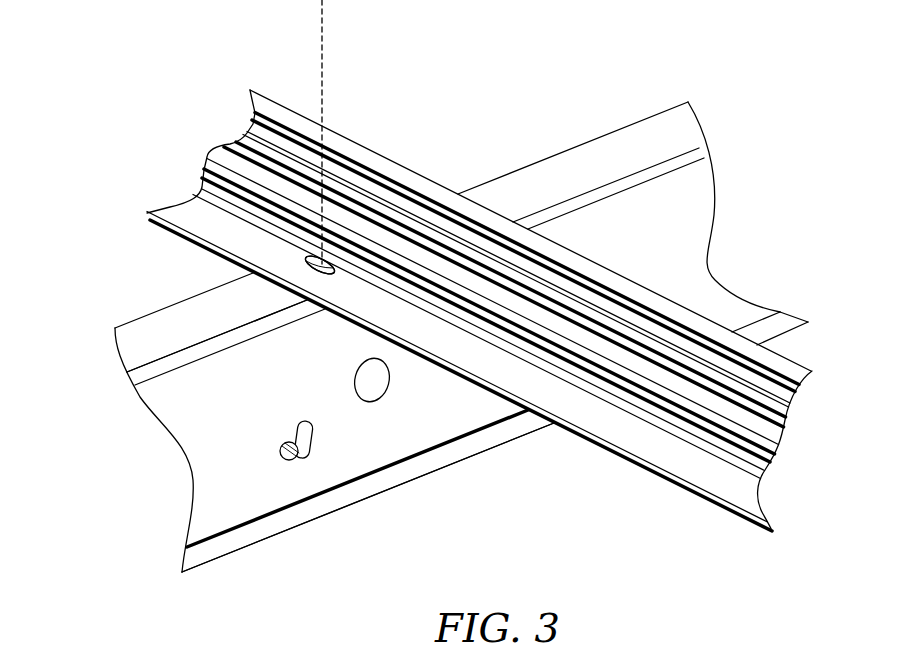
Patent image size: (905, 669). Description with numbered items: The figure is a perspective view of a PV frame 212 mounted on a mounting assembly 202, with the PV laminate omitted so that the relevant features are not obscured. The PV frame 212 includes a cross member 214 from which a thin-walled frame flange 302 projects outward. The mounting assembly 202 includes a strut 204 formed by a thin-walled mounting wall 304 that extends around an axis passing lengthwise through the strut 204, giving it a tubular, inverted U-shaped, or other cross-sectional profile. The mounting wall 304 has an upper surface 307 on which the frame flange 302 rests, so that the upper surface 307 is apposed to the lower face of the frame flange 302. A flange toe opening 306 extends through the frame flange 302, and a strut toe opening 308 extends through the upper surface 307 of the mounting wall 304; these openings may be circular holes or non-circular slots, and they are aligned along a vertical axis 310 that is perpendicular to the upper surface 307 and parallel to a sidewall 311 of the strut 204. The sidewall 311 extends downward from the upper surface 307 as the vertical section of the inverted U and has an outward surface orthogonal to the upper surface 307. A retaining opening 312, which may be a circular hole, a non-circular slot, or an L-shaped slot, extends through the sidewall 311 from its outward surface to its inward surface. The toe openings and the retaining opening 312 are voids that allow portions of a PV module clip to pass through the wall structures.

The mounting assembly 202 is at (294, 424).
The strut 204 is at (223, 502).
The PV frame 212 is at (479, 319).
The cross member 214 is at (658, 303).
The frame flange 302 is at (713, 475).
The mounting wall 304 is at (222, 315).
The flange toe opening 306 is at (330, 258).
The upper surface 307 is at (222, 315).
The strut toe opening 308 is at (330, 258).
The axis 310 is at (324, 62).
The sidewall 311 is at (263, 480).
The retaining opening 312 is at (312, 440).